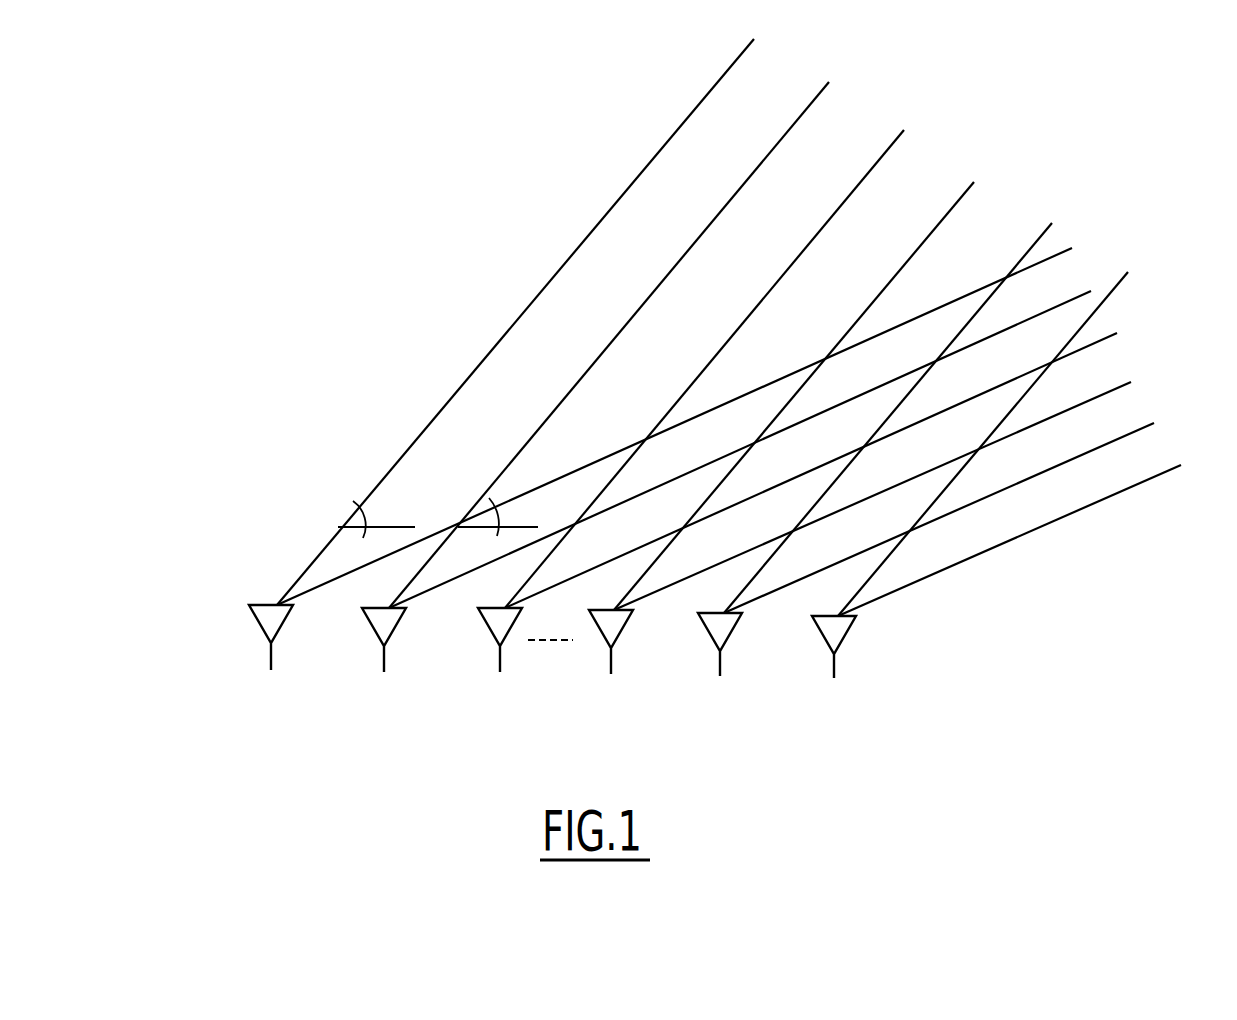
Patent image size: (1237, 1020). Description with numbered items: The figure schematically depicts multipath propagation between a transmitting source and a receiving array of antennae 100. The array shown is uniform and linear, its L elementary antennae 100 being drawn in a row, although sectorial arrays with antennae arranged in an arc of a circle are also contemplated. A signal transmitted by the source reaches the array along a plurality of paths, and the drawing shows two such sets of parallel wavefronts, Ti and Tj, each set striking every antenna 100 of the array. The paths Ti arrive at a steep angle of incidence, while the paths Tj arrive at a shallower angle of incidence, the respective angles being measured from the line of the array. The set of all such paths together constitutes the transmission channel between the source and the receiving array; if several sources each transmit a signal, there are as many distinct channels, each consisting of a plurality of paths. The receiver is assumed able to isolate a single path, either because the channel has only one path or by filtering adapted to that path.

The antenna array elements (100_1 … 100_L) 100 is at (549, 650).
The signal wavefront / beam from direction i Ti is at (978, 156).
The signal wavefront / beam from direction j Tj is at (1137, 348).